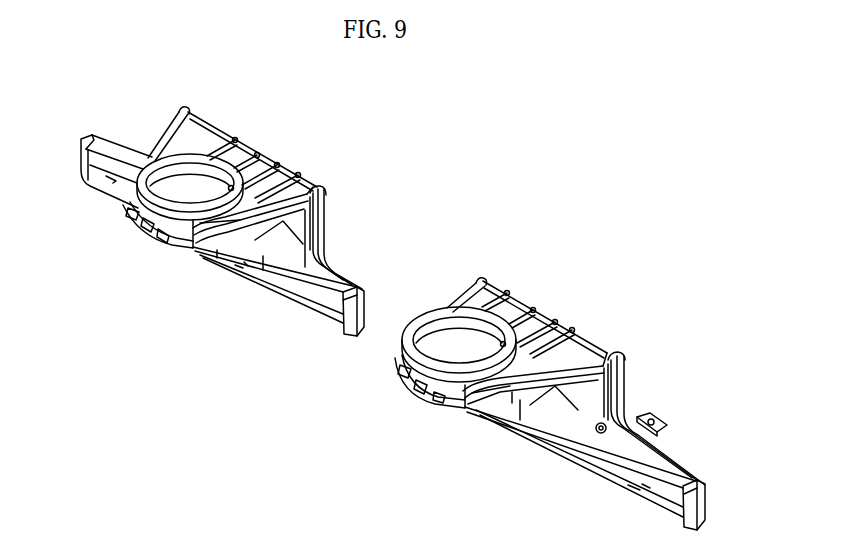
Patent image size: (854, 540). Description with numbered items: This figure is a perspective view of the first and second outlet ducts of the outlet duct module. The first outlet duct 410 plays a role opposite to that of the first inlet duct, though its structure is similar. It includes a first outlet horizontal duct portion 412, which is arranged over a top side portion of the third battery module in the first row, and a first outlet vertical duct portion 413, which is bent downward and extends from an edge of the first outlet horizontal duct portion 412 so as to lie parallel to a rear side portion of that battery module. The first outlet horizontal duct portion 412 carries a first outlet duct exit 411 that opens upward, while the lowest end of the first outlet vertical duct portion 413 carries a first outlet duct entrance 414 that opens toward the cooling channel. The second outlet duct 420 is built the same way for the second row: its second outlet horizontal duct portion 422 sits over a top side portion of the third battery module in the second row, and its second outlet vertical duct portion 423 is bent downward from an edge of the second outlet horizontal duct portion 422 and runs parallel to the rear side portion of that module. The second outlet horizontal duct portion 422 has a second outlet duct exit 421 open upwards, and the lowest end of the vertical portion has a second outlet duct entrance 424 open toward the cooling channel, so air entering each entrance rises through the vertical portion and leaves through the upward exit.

The first outlet duct 410 is at (571, 266).
The first outlet duct exit 411 is at (470, 351).
The first outlet horizontal duct portion 412 is at (519, 303).
The first outlet vertical duct portion 413 is at (622, 390).
The first outlet duct entrance 414 is at (632, 488).
The second outlet duct 420 is at (303, 111).
The second outlet duct exit 421 is at (199, 192).
The second outlet horizontal duct portion 422 is at (237, 145).
The second outlet vertical duct portion 423 is at (327, 222).
The second outlet duct entrance 424 is at (98, 188).